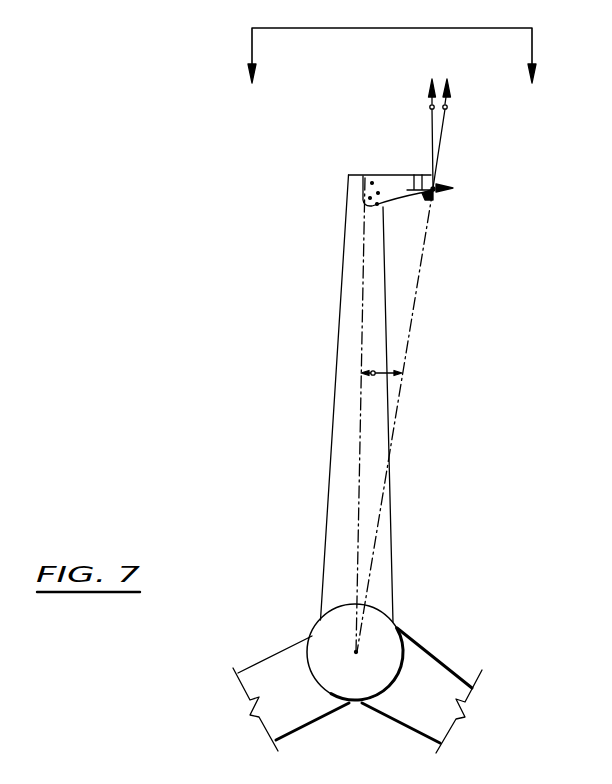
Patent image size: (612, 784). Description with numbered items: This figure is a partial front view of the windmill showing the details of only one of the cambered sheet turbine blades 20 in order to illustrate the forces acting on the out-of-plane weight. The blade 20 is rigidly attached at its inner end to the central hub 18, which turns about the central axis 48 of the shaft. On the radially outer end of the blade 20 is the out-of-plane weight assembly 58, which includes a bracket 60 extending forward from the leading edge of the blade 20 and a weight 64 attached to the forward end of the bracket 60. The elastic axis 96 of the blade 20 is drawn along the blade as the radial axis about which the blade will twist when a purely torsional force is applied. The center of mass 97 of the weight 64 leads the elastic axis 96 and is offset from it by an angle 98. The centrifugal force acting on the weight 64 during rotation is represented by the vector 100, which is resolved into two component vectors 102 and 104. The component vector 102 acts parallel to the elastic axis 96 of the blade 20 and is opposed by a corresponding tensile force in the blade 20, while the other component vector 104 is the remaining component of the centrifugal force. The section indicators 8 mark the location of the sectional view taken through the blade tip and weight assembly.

The section line 8- 8 is at (391, 71).
The central hub 18 is at (397, 627).
The cambered sheet turbine blade 20 is at (372, 453).
The central axis 48 is at (348, 649).
The out-of-plane weight assembly 58 is at (365, 175).
The bracket 60 is at (405, 188).
The weight 64 is at (438, 195).
The elastic axis 96 is at (355, 515).
The center of mass 97 is at (429, 201).
The angle 98 is at (385, 370).
The centrifugal force vector 100 is at (449, 106).
The component vector 102 is at (429, 106).
The component vector 104 is at (436, 200).